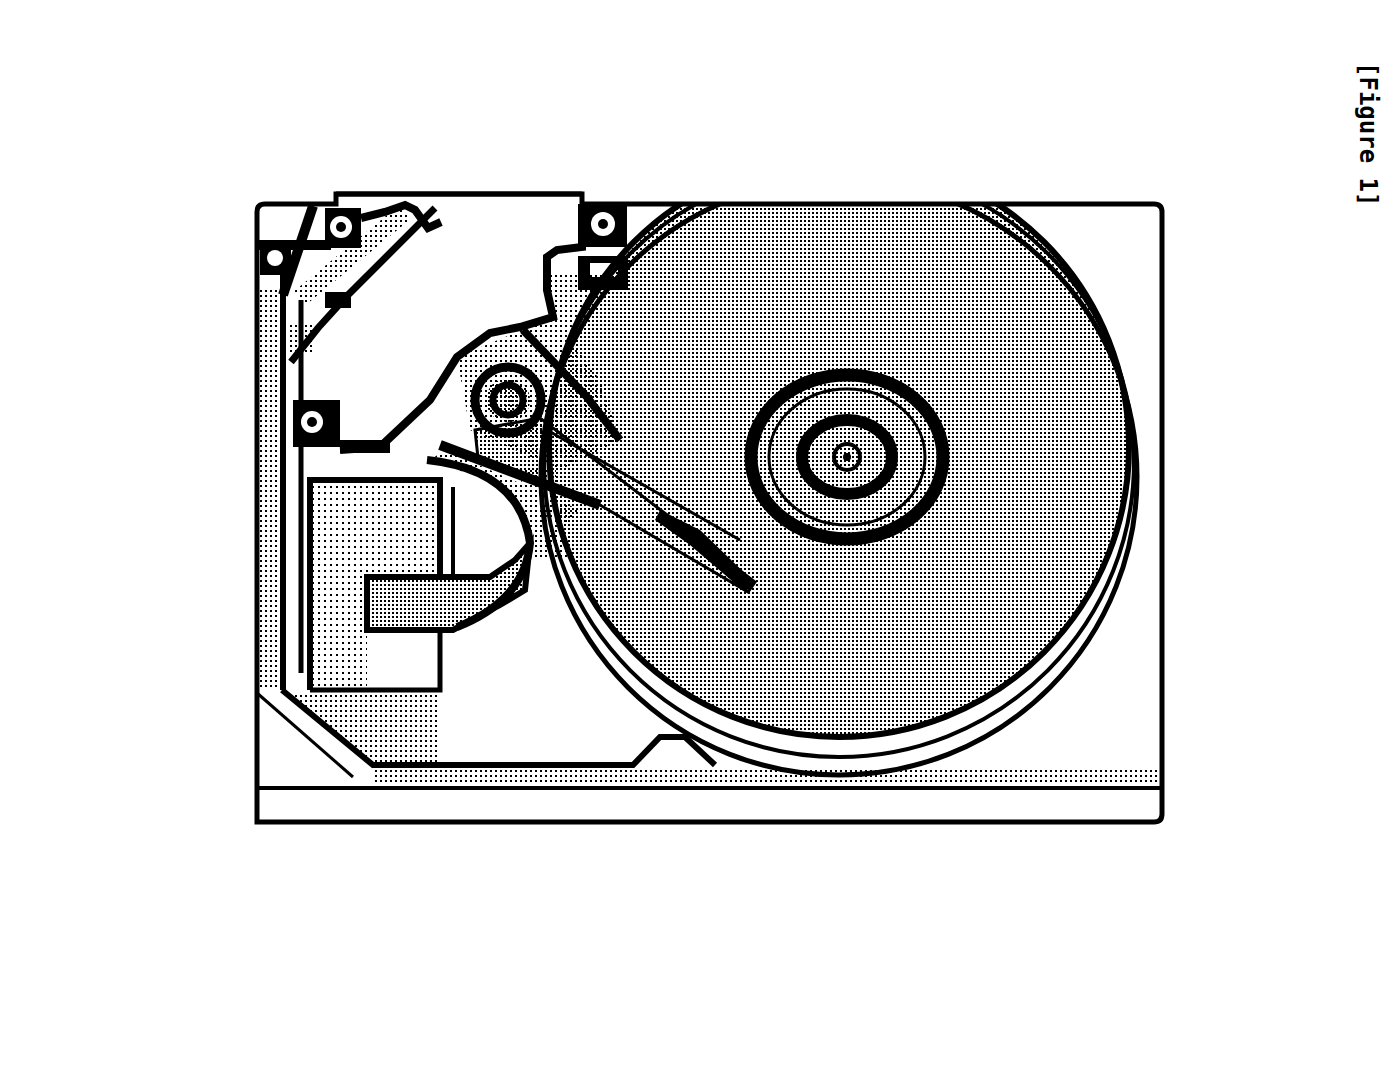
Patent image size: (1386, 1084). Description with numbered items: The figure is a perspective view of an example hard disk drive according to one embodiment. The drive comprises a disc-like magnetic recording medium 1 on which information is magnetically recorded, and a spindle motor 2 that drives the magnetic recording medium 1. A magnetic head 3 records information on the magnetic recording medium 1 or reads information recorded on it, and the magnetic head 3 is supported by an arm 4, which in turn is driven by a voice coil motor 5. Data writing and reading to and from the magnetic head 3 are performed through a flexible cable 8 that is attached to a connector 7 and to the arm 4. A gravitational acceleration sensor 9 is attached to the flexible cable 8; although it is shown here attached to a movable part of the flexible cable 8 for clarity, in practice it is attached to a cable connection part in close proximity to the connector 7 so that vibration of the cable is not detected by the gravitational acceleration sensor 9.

The magnetic recording medium 1 is at (827, 257).
The spindle motor 2 is at (953, 433).
The magnetic head 3 is at (700, 577).
The arm 4 is at (627, 467).
The voice coil motor 5 is at (510, 218).
The connector 7 is at (407, 550).
The flexible cable 8 is at (506, 600).
The gravitational acceleration sensor 9 is at (495, 582).